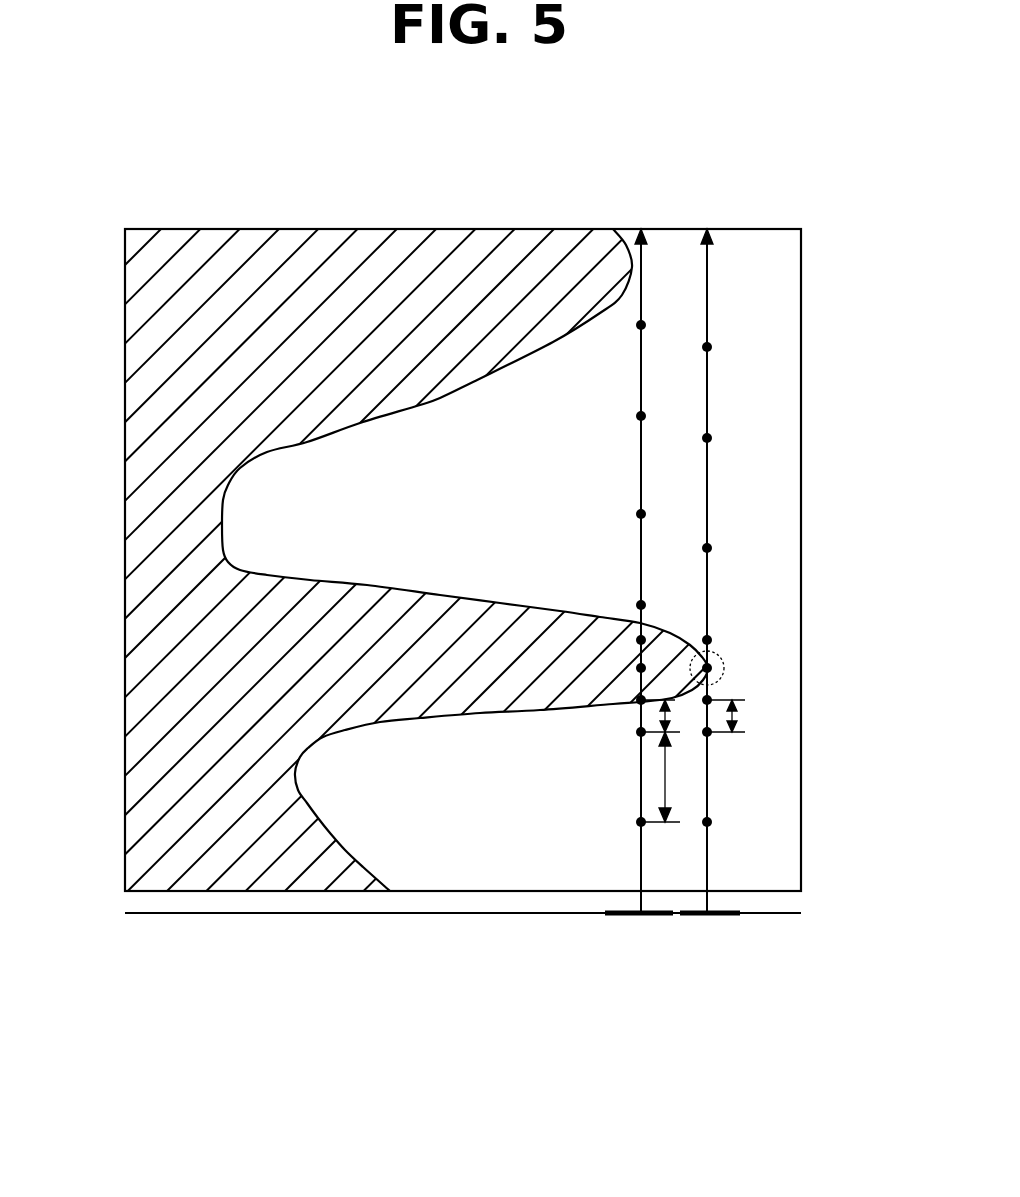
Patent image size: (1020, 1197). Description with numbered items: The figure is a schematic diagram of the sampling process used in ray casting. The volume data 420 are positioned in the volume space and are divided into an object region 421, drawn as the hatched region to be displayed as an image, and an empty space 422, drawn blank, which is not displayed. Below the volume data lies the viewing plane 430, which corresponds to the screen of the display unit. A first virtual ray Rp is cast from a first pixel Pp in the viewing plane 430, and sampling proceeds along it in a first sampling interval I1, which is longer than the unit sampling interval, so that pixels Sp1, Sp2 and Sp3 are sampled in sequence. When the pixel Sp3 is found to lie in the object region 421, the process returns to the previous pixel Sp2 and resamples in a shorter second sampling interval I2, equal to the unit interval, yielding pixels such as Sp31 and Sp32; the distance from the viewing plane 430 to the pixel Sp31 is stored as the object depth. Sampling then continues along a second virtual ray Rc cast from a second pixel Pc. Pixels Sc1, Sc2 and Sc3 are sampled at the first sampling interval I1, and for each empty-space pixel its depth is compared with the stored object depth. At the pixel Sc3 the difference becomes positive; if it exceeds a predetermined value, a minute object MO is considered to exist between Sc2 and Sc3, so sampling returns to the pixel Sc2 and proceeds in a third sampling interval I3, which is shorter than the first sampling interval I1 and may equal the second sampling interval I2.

The volume data 420 is at (350, 229).
The object region 421 is at (155, 690).
The empty space 422 is at (787, 482).
The viewing plane 430 is at (787, 913).
The first pixel Pp is at (623, 917).
The second pixel Pc is at (737, 917).
The first virtual ray Rp is at (641, 363).
The second virtual ray Rc is at (707, 417).
The sampled pixel Sp1 is at (636, 828).
The sampled pixel Sp2 is at (636, 740).
The sampled pixel Sp3 is at (637, 634).
The sampled pixel Sp31 is at (637, 693).
The sampled pixel Sp32 is at (637, 660).
The sampled pixel Sc1 is at (712, 826).
The sampled pixel Sc2 is at (712, 735).
The sampled pixel Sc3 is at (711, 629).
The minute object MO is at (729, 668).
The first sampling interval I1 is at (676, 758).
The second sampling interval I2 is at (667, 716).
The third sampling interval I3 is at (734, 716).